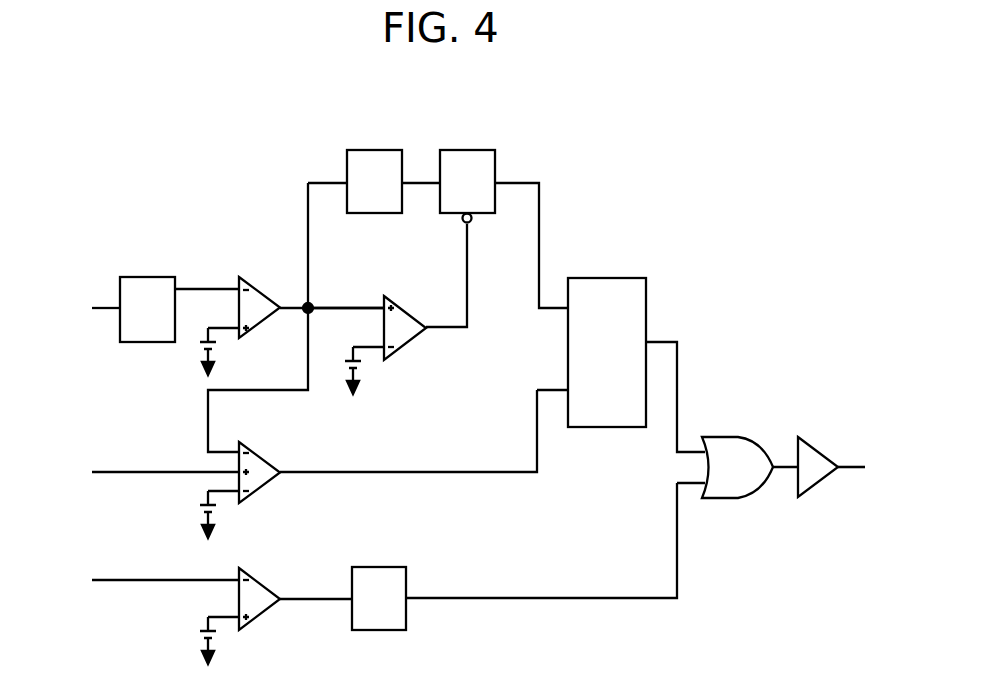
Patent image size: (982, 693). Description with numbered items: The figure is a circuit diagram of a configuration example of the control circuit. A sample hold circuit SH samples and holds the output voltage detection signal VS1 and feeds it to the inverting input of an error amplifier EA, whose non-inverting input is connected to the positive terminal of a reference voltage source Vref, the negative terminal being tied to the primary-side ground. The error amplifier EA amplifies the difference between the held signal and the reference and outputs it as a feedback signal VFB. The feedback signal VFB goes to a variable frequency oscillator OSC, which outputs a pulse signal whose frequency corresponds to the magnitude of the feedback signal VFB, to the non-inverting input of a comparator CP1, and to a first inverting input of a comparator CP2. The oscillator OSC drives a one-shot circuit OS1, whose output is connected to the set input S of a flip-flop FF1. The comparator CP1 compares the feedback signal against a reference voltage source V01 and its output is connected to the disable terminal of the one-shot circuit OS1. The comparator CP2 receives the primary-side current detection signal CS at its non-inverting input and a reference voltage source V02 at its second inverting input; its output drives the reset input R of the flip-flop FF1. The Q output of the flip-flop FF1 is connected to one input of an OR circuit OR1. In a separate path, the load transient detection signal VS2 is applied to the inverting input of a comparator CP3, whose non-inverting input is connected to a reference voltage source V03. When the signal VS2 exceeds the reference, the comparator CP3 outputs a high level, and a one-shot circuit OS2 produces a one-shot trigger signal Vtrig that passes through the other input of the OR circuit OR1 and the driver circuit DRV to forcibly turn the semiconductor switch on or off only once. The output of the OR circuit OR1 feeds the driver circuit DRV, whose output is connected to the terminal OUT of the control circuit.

The sample hold circuit SH is at (147, 309).
The output voltage detection signal VS1 is at (86, 308).
The error amplifier EA is at (279, 304).
The reference voltage source Vref is at (231, 351).
The feedback signal VFB is at (346, 296).
The comparator CP1 is at (425, 292).
The reference voltage source V01 is at (351, 364).
The variable frequency oscillator OSC is at (393, 181).
The one-shot circuit OS1 is at (504, 229).
The flip-flop FF1 is at (621, 353).
The OR circuit OR1 is at (737, 455).
The driver circuit DRV is at (830, 454).
The terminal OUT is at (860, 455).
The comparator CP2 is at (388, 446).
The primary-side current detection signal CS is at (148, 473).
The reference voltage source V02 is at (200, 514).
The comparator CP3 is at (295, 598).
The load transient detection signal VS2 is at (145, 580).
The reference voltage source V03 is at (200, 640).
The one-shot circuit OS2 is at (379, 598).
The one-shot trigger signal Vtrig is at (541, 540).